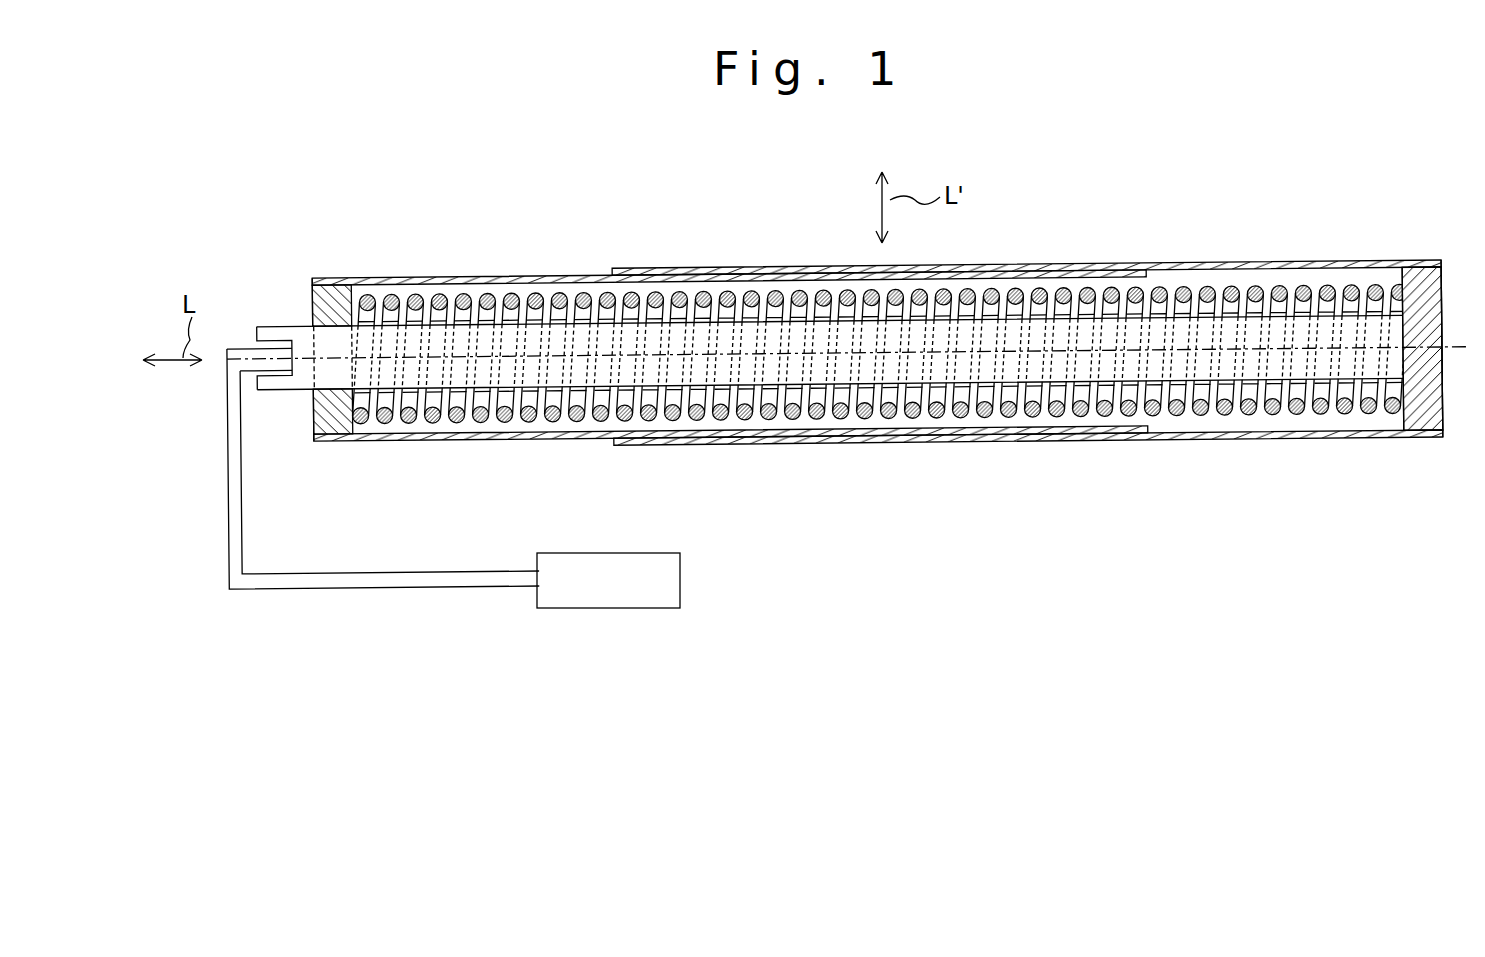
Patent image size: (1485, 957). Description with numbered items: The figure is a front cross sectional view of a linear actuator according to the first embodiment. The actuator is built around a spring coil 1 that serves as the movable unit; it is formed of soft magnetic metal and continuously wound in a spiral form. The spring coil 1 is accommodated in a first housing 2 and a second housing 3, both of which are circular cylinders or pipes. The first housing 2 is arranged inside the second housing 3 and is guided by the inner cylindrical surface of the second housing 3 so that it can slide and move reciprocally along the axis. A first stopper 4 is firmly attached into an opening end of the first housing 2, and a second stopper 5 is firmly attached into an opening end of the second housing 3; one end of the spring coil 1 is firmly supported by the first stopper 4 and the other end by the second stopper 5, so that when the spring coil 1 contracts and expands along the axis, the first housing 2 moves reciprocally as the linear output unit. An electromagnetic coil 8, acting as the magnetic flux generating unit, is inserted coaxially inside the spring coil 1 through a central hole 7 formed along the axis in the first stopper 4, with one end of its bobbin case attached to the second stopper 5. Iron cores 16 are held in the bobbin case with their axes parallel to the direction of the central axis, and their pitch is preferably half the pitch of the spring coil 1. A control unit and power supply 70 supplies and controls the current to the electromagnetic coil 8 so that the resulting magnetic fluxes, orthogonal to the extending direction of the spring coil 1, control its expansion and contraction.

The spring coil 1 is at (1230, 412).
The first housing 2 is at (520, 441).
The second housing 3 is at (1253, 264).
The first stopper 4 is at (333, 415).
The second stopper 5 is at (1438, 272).
The central hole 7 is at (311, 393).
The electromagnetic coil 8 is at (333, 347).
The iron core 16 is at (1084, 300).
The control unit and power supply 70 is at (683, 578).